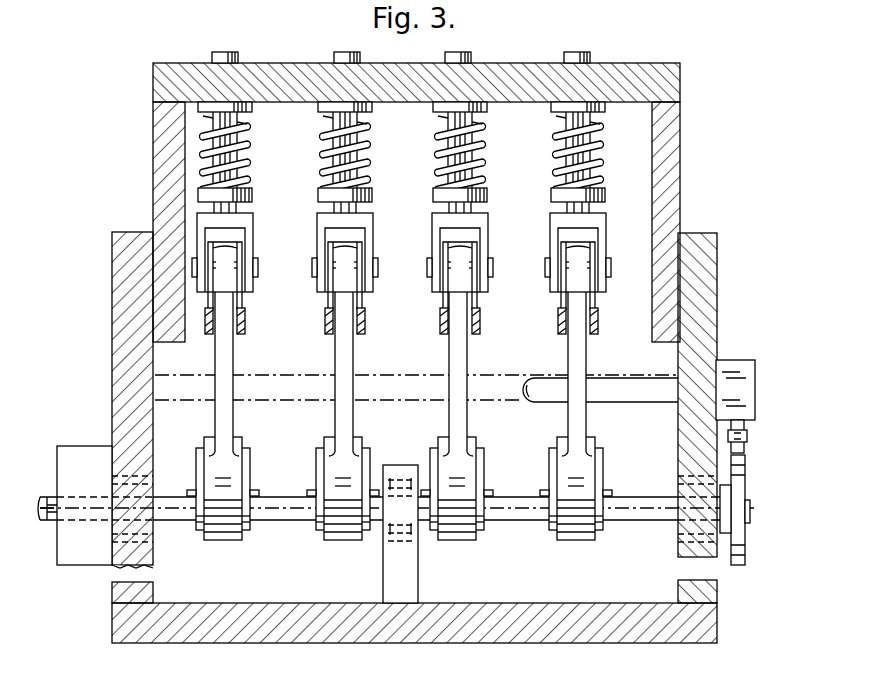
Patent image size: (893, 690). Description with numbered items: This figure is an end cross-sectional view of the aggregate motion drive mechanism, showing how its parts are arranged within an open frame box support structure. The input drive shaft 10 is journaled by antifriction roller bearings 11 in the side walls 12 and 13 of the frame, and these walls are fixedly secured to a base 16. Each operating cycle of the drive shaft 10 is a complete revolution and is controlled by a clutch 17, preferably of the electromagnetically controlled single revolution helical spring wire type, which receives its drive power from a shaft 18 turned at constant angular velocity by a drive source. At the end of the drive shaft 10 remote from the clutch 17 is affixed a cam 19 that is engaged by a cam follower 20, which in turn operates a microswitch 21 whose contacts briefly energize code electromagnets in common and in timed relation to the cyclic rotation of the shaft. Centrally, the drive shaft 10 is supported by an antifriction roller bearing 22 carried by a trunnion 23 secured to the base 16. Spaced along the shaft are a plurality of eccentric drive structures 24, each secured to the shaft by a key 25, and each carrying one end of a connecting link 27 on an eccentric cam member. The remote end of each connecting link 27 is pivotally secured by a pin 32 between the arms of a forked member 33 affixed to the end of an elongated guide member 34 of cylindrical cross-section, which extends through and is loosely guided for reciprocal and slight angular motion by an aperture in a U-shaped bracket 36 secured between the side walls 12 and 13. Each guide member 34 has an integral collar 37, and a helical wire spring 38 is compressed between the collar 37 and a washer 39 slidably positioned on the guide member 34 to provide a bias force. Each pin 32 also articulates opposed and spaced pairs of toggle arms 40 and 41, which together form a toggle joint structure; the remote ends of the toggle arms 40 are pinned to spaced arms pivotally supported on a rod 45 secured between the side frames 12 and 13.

The input drive shaft 10 is at (512, 521).
The antifriction roller bearings 11 is at (150, 478).
The side wall 12 is at (703, 298).
The side wall 13 is at (112, 297).
The base 16 is at (447, 643).
The clutch 17 is at (65, 565).
The shaft 18 is at (48, 521).
The cam 19 is at (745, 550).
The cam follower 20 is at (747, 437).
The microswitch 21 is at (745, 395).
The antifriction roller bearing 22 is at (380, 480).
The trunnion 23 is at (398, 568).
The eccentric drive structures 24 is at (250, 462).
The key 25 is at (259, 492).
The connecting link 27 is at (215, 415).
The pin 32 is at (312, 267).
The forked member 33 is at (317, 224).
The elongated guide member 34 is at (334, 54).
The U-shaped bracket 36 is at (680, 95).
The collar 37 is at (318, 196).
The helical wire spring 38 is at (326, 136).
The washer 39 is at (318, 110).
The toggle arms 40 is at (350, 250).
The toggle arms 41 is at (325, 323).
The rod 45 is at (636, 390).